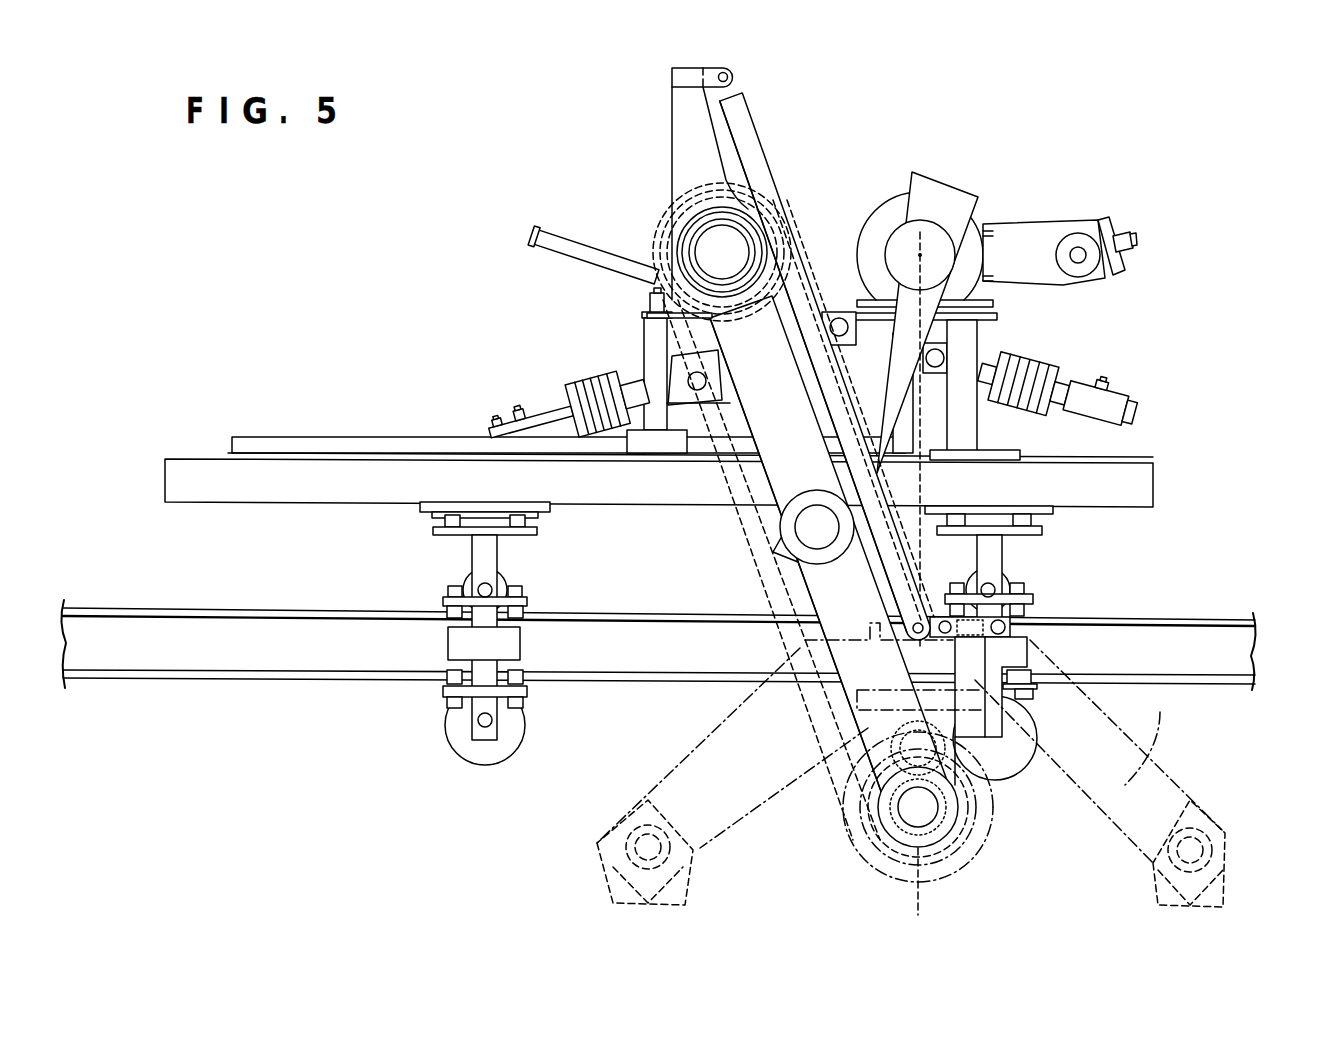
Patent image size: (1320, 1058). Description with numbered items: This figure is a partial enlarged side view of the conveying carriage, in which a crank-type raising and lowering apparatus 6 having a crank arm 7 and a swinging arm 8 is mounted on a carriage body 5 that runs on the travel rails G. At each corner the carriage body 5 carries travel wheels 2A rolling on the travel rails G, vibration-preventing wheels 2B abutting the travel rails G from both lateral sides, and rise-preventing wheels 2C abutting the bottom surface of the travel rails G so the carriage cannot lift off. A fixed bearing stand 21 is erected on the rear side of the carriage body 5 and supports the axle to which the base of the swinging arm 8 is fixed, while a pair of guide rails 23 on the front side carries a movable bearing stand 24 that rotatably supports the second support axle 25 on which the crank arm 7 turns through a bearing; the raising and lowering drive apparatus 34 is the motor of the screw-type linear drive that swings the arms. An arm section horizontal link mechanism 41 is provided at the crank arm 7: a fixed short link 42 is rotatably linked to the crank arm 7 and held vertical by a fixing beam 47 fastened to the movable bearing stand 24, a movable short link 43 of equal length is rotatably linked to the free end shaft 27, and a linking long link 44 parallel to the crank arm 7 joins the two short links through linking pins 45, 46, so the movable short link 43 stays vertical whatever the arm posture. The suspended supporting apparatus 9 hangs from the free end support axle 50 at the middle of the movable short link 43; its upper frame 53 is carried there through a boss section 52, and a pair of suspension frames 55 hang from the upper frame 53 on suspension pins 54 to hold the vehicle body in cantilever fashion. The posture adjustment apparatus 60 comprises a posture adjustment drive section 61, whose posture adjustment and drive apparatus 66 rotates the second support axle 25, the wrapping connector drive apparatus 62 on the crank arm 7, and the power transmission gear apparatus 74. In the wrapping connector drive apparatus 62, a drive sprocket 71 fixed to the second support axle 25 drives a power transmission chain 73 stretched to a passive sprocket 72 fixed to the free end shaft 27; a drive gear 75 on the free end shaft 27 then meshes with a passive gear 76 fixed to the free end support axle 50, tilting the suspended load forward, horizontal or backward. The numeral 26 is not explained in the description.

The travel rails G is at (197, 597).
The travel wheels 2A is at (466, 586).
The vibration-preventing wheels 2B is at (1030, 645).
The rise-preventing wheels 2C is at (458, 718).
The carriage body 5 is at (1114, 453).
The raising and lowering apparatus 6 is at (535, 181).
The crank arm 7 is at (768, 491).
The swinging arm 8 is at (921, 246).
The suspended supporting apparatus 9 is at (1207, 789).
The fixed bearing stand 21 is at (991, 338).
The guide rails 23 is at (386, 436).
The movable bearing stand 24 is at (641, 333).
The second support axle 25 is at (722, 252).
The intermediate joint 26 is at (806, 538).
The free end shaft 27 is at (907, 818).
The raising and lowering drive apparatus 34 is at (557, 426).
The arm section horizontal link mechanism 41 is at (771, 121).
The fixed short link 42 is at (690, 143).
The movable short link 43 is at (975, 677).
The linking long link 44 is at (760, 165).
The linking pin 45 is at (729, 78).
The linking pin 46 is at (921, 626).
The fixing beam 47 is at (812, 255).
The free end support axle 50 is at (880, 805).
The boss section 52 is at (848, 783).
The upper frame 53 is at (1148, 735).
The suspension pins 54 is at (650, 847).
The suspension frames 55 is at (612, 886).
The posture adjustment apparatus 60 is at (571, 351).
The posture adjustment drive section 61 is at (1071, 359).
The wrapping connector drive apparatus 62 is at (758, 538).
The posture adjustment and drive apparatus 66 is at (1108, 395).
The drive sprocket 71 is at (665, 205).
The passive sprocket 72 is at (900, 878).
The power transmission chain 73 is at (772, 582).
The power transmission gear apparatus 74 is at (870, 818).
The drive gear 75 is at (962, 832).
The passive gear 76 is at (978, 812).